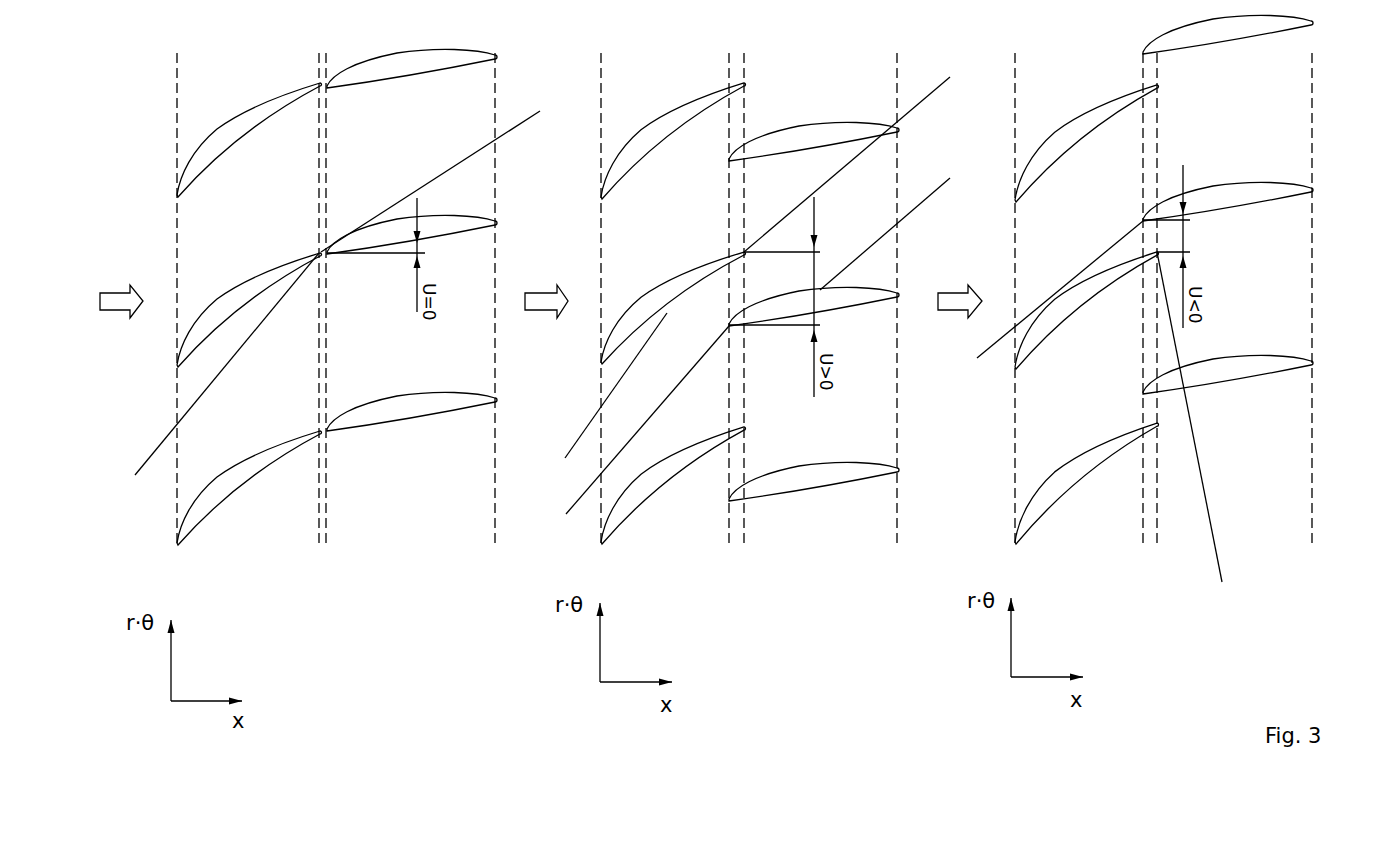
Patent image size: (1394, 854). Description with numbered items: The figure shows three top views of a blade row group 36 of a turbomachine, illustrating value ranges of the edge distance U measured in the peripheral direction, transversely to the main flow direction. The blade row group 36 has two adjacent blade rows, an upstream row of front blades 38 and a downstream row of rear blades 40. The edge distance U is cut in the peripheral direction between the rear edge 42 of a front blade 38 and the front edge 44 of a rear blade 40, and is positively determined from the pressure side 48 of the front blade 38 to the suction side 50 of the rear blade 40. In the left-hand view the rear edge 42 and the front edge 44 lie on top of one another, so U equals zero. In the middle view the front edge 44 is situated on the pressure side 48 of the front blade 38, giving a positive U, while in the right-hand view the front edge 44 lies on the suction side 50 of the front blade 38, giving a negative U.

The blade row group 36 is at (173, 73).
The front blade 38 is at (197, 338).
The rear blade 40 is at (433, 228).
The rear edge 42 is at (786, 336).
The front edge 44 is at (627, 372).
The pressure side 48 is at (604, 393).
The suction side 50 is at (900, 229).